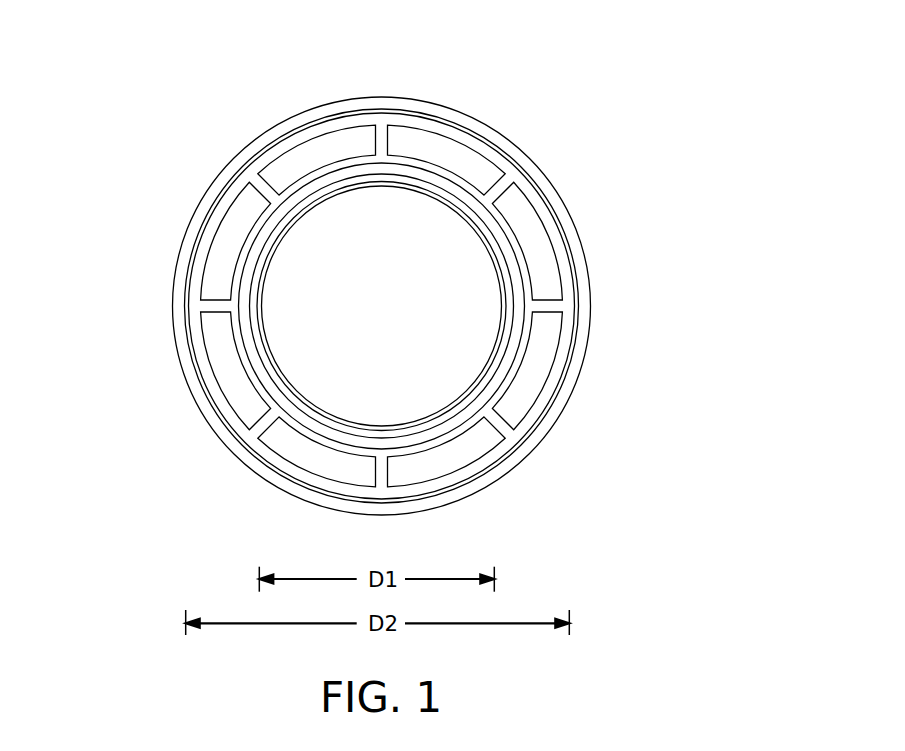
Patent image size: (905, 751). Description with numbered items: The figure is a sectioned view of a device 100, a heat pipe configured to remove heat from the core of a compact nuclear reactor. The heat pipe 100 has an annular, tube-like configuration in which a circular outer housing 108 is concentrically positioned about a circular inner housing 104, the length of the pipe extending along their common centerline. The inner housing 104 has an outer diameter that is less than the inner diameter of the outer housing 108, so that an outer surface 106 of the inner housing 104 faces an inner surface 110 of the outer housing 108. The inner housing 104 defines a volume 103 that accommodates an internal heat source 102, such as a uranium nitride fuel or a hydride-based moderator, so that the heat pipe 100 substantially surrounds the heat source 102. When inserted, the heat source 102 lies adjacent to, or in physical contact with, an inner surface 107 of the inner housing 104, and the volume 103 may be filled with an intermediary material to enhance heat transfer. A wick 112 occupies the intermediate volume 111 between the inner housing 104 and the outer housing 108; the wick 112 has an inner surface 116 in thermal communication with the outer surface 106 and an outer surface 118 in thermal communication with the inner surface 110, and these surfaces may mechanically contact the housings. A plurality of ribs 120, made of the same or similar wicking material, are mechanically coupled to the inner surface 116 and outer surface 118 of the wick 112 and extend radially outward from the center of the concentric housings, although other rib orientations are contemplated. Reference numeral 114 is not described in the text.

The device 100 is at (678, 60).
The internal heat source 102 is at (474, 301).
The volume 103 is at (330, 408).
The inner housing 104 is at (503, 224).
The outer surface 106 is at (271, 197).
The inner surface 107 is at (279, 315).
The outer housing 108 is at (514, 134).
The inner surface 110 is at (190, 215).
The intermediate volume 111 is at (212, 362).
The wick 112 is at (552, 330).
The pocket 114 is at (474, 460).
The inner surface 116 is at (511, 380).
The outer surface 118 is at (535, 437).
The plurality of ribs 120 is at (373, 473).